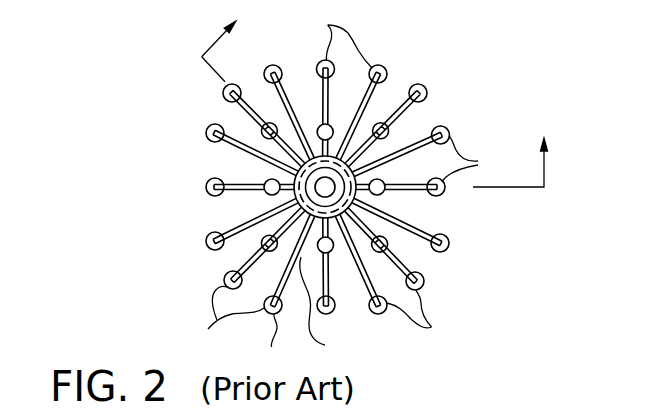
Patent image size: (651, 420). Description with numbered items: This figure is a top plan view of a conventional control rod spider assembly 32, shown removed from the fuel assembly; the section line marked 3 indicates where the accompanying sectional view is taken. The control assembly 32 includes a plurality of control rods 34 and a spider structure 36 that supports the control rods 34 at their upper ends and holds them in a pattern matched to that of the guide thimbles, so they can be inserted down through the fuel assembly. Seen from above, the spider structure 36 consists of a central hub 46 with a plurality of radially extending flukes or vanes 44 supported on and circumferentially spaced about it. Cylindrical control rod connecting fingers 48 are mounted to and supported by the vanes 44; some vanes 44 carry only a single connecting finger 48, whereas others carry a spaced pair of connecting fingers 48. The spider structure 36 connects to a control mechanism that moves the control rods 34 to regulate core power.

The section line for FIG. 3 is at (376, 98).
The control rod spider assembly 32 is at (493, 118).
The control rods 34 is at (366, 185).
The spider structure 36 is at (328, 307).
The vanes 44 is at (402, 117).
The central hub 46 is at (293, 180).
The connecting fingers 48 is at (341, 238).